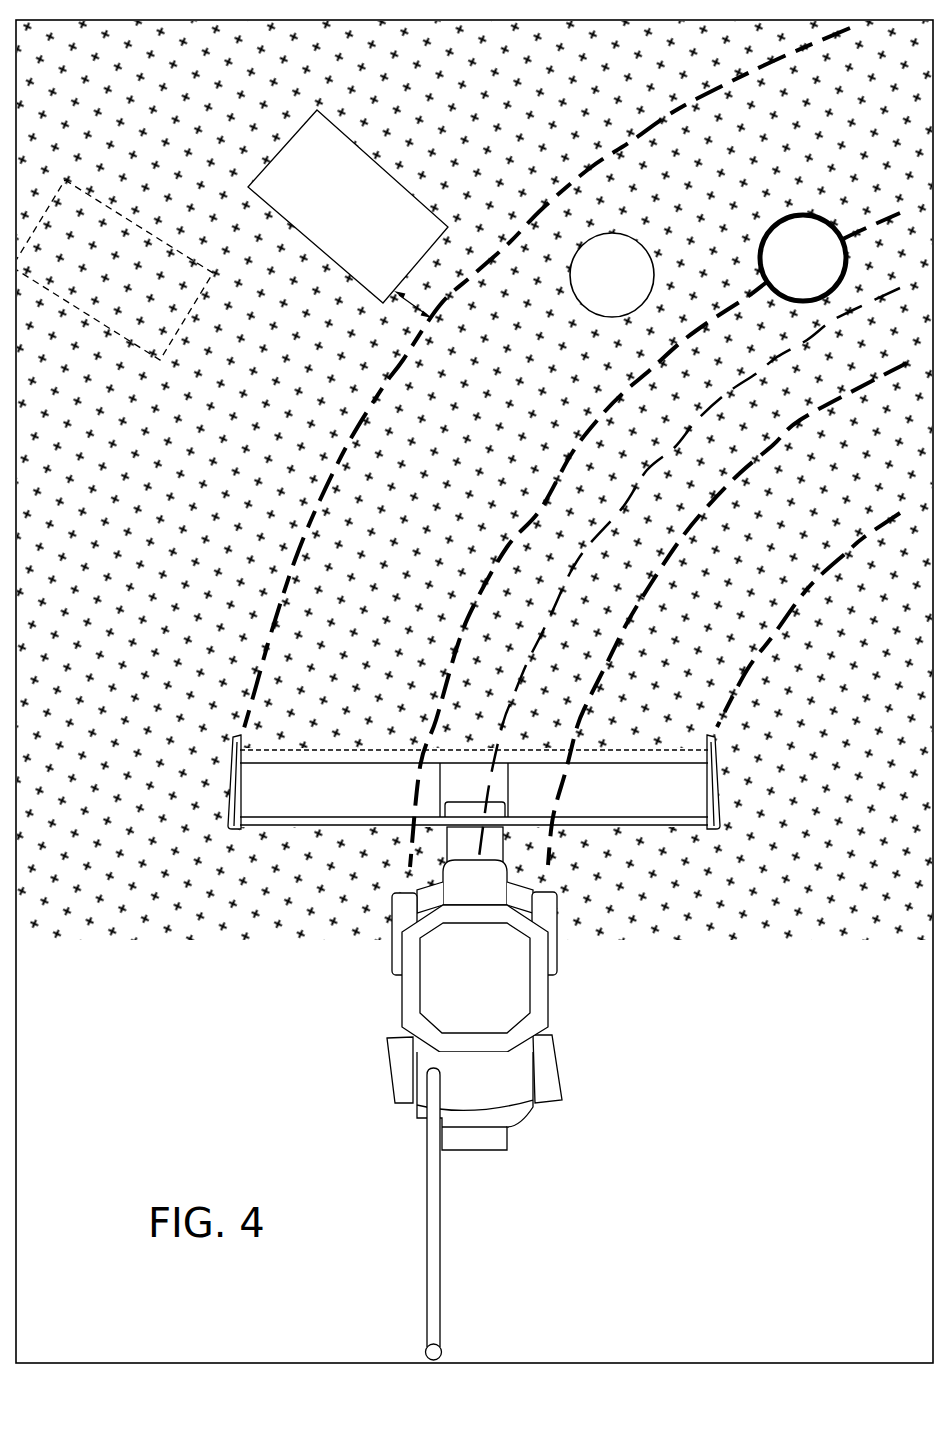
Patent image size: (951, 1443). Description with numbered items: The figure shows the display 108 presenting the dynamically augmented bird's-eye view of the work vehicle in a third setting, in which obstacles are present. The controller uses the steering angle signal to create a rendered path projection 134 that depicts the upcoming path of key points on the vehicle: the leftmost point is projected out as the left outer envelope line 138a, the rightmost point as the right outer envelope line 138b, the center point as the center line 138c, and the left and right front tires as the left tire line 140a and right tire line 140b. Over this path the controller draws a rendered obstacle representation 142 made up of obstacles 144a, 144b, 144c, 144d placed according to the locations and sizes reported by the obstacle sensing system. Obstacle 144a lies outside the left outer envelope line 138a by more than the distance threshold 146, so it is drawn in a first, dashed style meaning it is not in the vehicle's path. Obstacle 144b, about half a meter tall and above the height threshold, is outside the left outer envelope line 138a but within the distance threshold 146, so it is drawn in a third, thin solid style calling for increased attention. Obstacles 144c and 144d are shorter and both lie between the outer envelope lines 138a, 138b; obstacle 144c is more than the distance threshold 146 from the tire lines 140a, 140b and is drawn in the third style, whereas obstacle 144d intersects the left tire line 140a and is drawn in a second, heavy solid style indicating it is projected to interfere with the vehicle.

The display 108 is at (290, 1362).
The rendered path projection 134 is at (783, 687).
The left outer envelope line 138a is at (287, 578).
The right outer envelope line 138b is at (787, 622).
The center line 138c is at (623, 507).
The left tire line 140a is at (507, 547).
The right tire line 140b is at (650, 585).
The rendered obstacle representation 142 is at (240, 112).
The obstacle 144a is at (100, 332).
The obstacle 144b is at (381, 217).
The obstacle 144c is at (643, 290).
The obstacle 144d is at (834, 272).
The distance threshold 146 is at (412, 306).